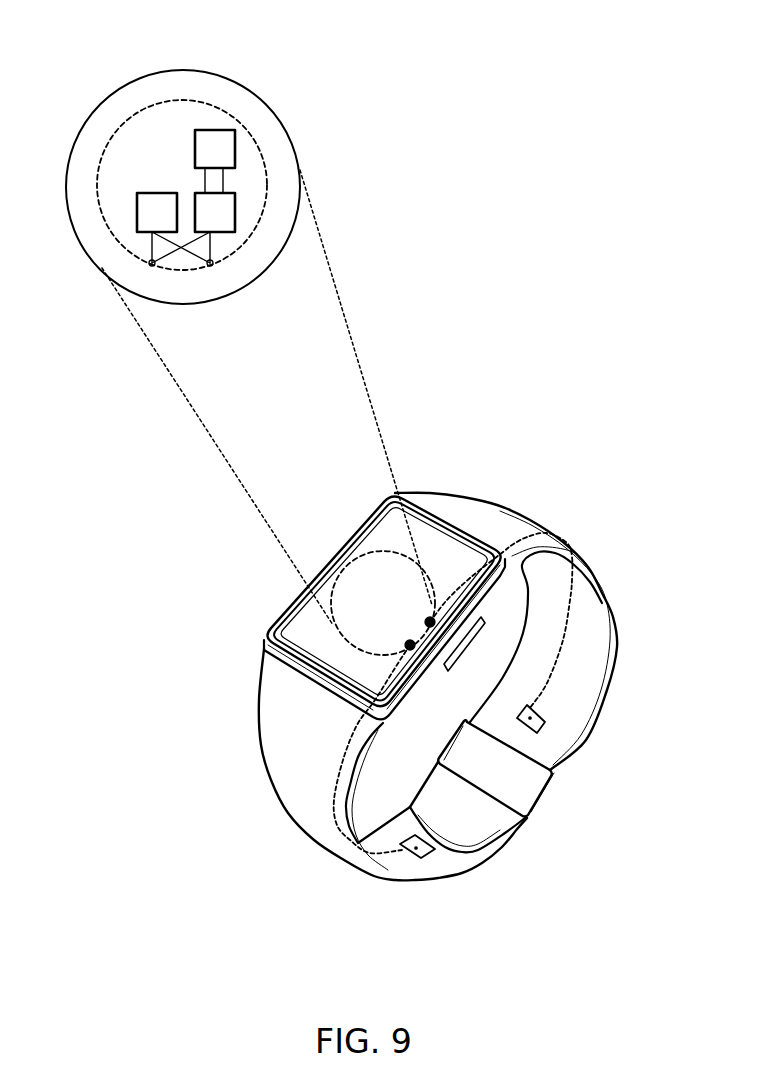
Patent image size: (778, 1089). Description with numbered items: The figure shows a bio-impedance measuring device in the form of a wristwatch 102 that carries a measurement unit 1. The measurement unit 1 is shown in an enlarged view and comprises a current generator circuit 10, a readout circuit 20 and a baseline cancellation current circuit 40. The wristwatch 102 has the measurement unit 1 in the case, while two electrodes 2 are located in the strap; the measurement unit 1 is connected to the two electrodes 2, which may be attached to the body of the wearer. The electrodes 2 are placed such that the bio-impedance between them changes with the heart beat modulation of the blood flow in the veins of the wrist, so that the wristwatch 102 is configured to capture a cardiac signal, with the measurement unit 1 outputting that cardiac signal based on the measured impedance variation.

The measurement unit 1 is at (232, 78).
The current generator circuit 10 is at (137, 213).
The readout circuit 20 is at (235, 215).
The baseline cancellation current circuit 40 is at (235, 148).
The wristwatch 102 is at (519, 417).
The electrodes 2 is at (427, 856).